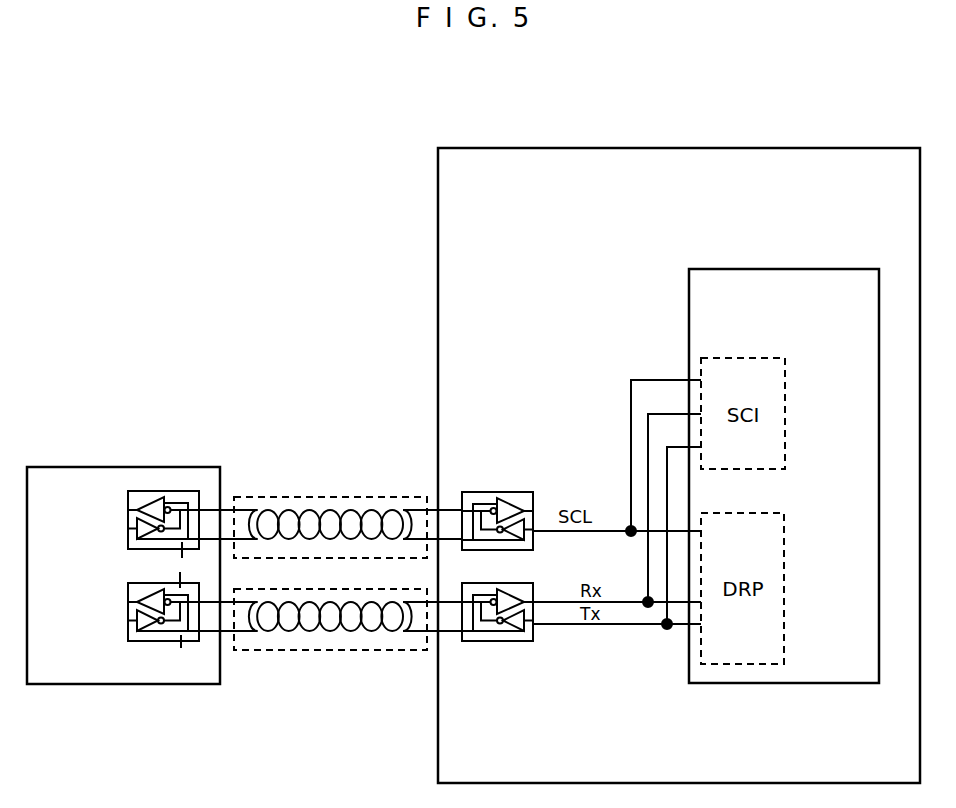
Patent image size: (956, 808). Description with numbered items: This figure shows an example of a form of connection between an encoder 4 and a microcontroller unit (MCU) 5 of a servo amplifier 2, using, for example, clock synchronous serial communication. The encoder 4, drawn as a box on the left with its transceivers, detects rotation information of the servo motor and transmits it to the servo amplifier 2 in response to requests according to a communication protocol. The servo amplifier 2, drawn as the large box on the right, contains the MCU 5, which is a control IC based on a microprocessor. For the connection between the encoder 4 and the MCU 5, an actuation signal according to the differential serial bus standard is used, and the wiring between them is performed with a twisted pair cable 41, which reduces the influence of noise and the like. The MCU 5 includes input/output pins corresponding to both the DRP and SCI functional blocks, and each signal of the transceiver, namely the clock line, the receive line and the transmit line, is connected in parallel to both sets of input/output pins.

The servo amplifier 2 is at (683, 149).
The microcontroller unit (MCU) 5 is at (775, 269).
The encoder 4 is at (112, 467).
The twisted pair cable 41 is at (310, 497).